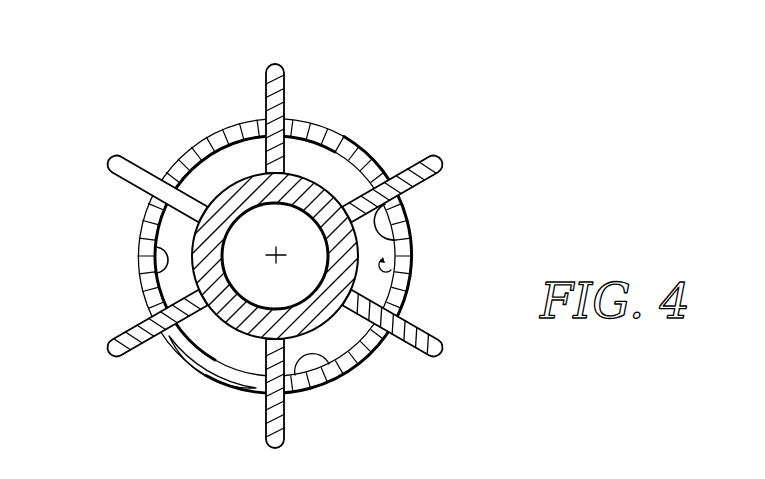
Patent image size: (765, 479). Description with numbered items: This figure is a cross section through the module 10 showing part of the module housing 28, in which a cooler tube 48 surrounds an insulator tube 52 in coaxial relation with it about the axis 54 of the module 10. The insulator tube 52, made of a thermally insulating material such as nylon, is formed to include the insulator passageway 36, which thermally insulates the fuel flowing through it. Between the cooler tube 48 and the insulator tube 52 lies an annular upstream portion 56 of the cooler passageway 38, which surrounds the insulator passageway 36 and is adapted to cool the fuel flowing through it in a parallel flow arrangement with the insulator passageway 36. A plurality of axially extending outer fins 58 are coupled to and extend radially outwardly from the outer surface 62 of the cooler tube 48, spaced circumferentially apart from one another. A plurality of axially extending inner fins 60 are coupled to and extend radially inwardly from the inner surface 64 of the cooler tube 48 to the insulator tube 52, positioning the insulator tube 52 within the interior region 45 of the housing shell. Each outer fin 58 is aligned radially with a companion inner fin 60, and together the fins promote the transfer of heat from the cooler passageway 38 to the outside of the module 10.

The module 10 is at (104, 80).
The module housing 28 is at (407, 162).
The insulator passageway 36 is at (237, 292).
The cooler passageway 38 is at (382, 268).
The interior region 45 is at (413, 288).
The cooler tube 48 is at (188, 140).
The insulator tube 52 is at (322, 178).
The axis 54 is at (280, 252).
The annular upstream portion 56 is at (383, 239).
The outer fins 58 is at (438, 359).
The inner fins 60 is at (187, 310).
The outer surface 62 is at (140, 216).
The inner surface 64 is at (150, 286).